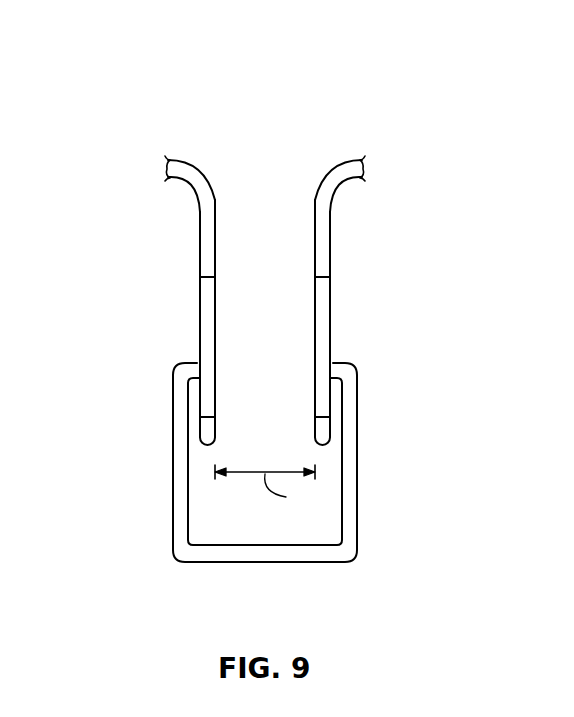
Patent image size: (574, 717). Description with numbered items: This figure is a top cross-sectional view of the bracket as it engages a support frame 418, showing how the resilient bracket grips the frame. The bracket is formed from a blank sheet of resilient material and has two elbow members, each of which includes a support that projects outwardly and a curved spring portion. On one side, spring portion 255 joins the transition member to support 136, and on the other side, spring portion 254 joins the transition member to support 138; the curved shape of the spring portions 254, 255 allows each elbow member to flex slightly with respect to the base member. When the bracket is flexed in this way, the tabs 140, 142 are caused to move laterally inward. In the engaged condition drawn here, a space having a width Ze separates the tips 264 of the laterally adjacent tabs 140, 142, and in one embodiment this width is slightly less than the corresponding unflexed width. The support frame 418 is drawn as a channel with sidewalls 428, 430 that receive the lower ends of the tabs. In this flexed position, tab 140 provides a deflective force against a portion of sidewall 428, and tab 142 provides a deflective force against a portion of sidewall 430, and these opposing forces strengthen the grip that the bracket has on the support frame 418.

The support frame 418 is at (146, 68).
The spring portion 255 is at (183, 158).
The spring portion 254 is at (350, 159).
The support 136 is at (207, 243).
The support 138 is at (327, 243).
The tab 140 is at (188, 310).
The tab 142 is at (344, 310).
The tips 264 is at (205, 430).
The sidewall 428 is at (187, 497).
The sidewall 430 is at (348, 497).